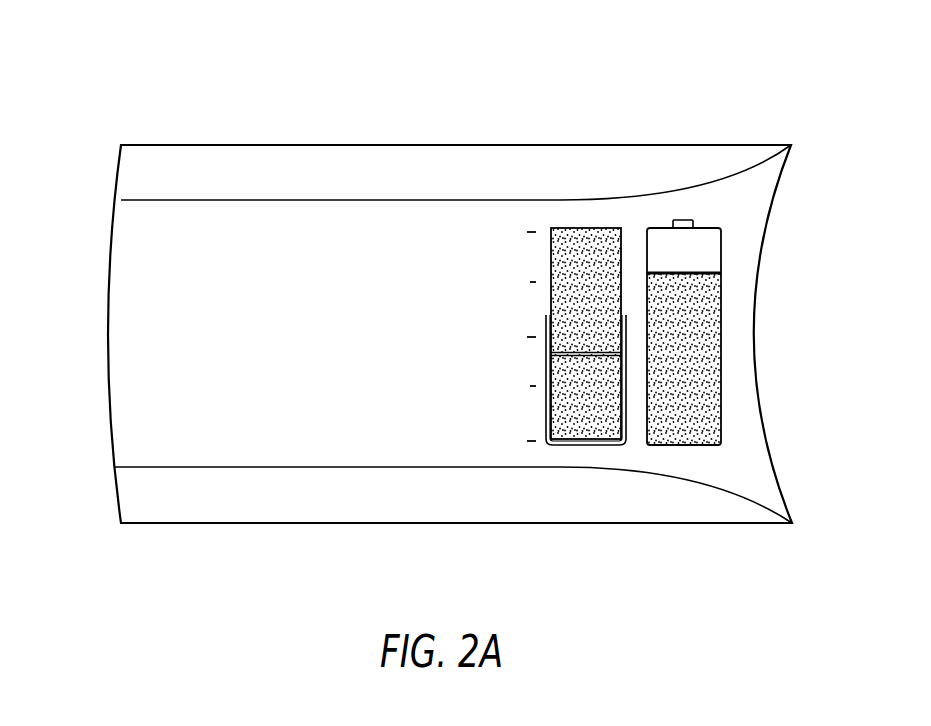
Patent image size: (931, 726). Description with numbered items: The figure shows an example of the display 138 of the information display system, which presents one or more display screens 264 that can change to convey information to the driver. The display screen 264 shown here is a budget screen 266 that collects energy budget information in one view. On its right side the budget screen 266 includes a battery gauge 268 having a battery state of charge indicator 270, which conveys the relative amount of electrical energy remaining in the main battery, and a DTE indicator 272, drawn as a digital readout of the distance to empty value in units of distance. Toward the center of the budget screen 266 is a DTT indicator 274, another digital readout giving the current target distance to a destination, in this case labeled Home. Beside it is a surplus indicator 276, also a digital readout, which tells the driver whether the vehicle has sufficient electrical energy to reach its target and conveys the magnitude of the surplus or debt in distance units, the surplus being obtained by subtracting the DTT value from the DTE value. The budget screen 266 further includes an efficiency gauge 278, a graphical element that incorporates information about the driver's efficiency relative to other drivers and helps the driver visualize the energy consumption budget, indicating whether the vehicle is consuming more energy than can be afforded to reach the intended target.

The display 138 is at (435, 281).
The display screen 264 is at (110, 295).
The budget screen 266 is at (435, 225).
The battery gauge 268 is at (748, 336).
The battery state of charge indicator 270 is at (705, 272).
The DTE indicator 272 is at (712, 320).
The DTT indicator 274 is at (217, 384).
The surplus indicator 276 is at (396, 382).
The efficiency gauge 278 is at (586, 221).